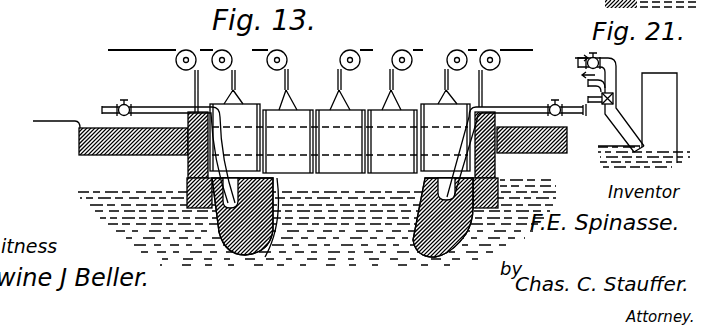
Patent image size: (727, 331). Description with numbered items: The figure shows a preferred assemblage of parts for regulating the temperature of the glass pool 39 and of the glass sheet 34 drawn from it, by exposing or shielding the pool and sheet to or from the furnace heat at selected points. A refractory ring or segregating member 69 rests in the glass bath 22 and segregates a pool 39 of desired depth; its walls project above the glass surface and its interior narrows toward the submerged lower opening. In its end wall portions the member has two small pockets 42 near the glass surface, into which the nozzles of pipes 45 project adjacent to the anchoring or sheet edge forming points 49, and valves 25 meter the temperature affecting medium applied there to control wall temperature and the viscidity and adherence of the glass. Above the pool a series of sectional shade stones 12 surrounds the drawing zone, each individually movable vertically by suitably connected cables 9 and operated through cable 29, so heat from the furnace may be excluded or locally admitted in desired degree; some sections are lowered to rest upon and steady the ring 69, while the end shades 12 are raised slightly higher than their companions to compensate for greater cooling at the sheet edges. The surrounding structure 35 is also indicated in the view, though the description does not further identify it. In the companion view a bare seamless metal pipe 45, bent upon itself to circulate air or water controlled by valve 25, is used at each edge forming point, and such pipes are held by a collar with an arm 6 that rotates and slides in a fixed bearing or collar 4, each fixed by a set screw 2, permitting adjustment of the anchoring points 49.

In FIG. 13, the cables 9 is at (110, 50).
In FIG. 13, the valve 25 is at (120, 100).
In FIG. 21, the valve 25 is at (583, 51).
In FIG. 13, the pipe 45 is at (104, 108).
In FIG. 21, the pipe 45 is at (617, 133).
In FIG. 13, the shade stones 12 is at (298, 116).
In FIG. 13, the floor slab 35 is at (363, 132).
In FIG. 13, the glass bath 22 is at (172, 262).
In FIG. 21, the glass bath 22 is at (606, 156).
In FIG. 13, the cable 29 is at (216, 228).
In FIG. 13, the pockets 42 is at (246, 256).
In FIG. 13, the anchoring points 49 is at (280, 235).
In FIG. 21, the anchoring points 49 is at (650, 152).
In FIG. 13, the glass pool 39 is at (330, 228).
In FIG. 13, the ring or segregating member 69 is at (420, 254).
In FIG. 21, the fixed bearing or collar 4 is at (617, 70).
In FIG. 21, the set screw 2 is at (616, 98).
In FIG. 21, the arm 6 is at (597, 105).
In FIG. 21, the glass sheet 34 is at (668, 108).